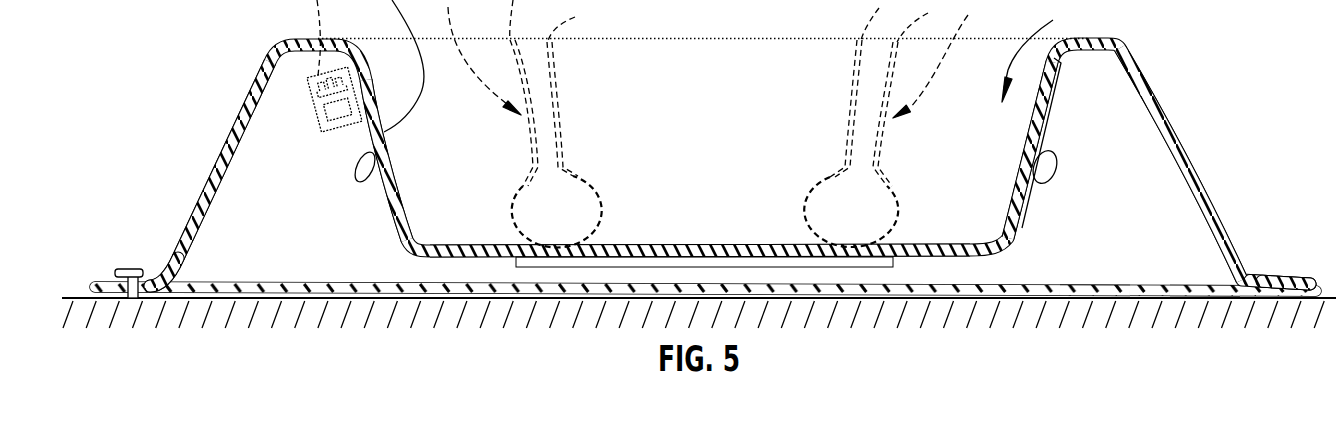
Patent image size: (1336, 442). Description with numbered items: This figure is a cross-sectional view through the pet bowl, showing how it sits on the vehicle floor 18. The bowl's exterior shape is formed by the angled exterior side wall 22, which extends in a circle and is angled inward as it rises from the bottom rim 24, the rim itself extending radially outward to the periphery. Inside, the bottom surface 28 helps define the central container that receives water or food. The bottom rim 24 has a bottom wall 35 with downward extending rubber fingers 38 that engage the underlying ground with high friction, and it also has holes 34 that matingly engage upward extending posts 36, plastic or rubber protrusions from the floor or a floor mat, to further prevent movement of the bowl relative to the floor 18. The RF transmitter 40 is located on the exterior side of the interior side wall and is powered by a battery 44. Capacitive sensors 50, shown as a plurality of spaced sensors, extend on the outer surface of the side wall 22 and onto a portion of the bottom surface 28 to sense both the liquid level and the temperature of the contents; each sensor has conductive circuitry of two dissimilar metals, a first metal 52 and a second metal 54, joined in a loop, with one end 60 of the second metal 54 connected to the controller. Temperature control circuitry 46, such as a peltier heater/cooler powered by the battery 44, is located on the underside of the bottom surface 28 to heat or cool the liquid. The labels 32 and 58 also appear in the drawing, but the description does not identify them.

The vehicle floor 18 is at (82, 298).
The exterior side wall 22 is at (1177, 130).
The bottom rim 24 is at (1292, 279).
The bottom surface 28 is at (680, 248).
The side wall 32 is at (183, 238).
The holes 34 is at (142, 277).
The bottom wall 35 is at (1176, 294).
The posts 36 is at (131, 269).
The rubber fingers 38 is at (1090, 292).
The RF transmitter 40 is at (306, 95).
The battery 44 is at (313, 127).
The temperature control circuitry 46 is at (895, 265).
The capacitive sensors 50 is at (1163, 41).
The first metal 52 is at (510, 197).
The second metal 54 is at (603, 197).
The folding direction 58 is at (665, 57).
The end 60 is at (749, 21).